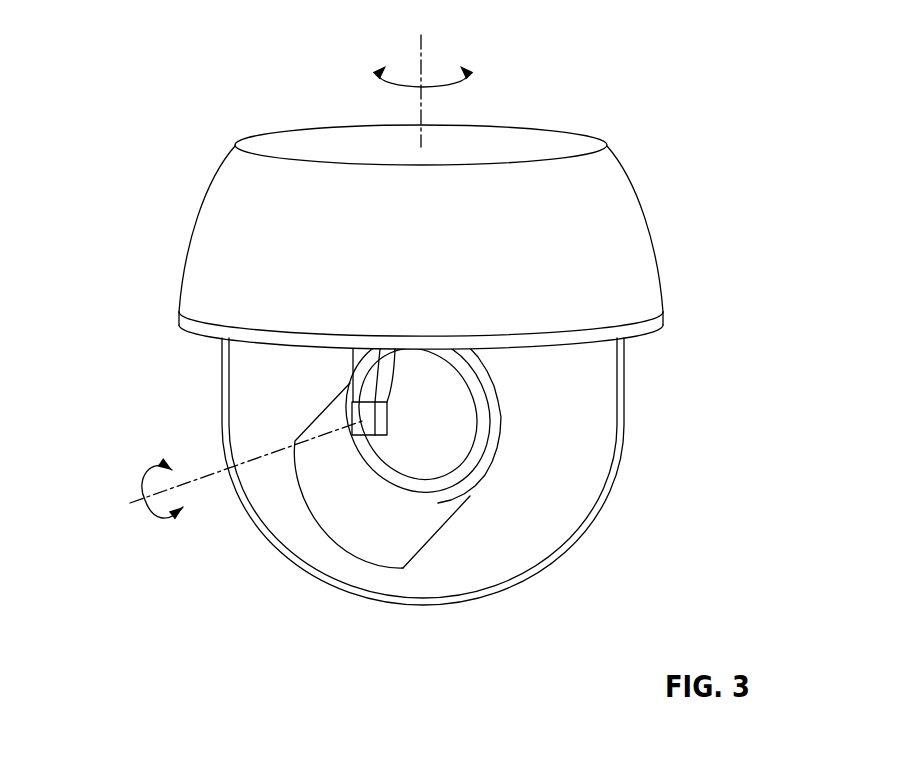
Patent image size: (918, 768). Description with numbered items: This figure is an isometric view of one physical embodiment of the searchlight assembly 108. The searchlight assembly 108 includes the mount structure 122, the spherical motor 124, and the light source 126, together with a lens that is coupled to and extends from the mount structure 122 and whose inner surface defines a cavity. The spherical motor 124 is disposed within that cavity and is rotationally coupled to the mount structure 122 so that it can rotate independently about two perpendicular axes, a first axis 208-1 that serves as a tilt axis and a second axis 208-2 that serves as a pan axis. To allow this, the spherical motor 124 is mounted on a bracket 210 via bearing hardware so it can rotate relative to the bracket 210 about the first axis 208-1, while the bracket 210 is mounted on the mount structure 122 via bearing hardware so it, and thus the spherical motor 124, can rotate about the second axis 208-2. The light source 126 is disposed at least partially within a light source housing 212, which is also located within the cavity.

The searchlight assembly 108 is at (168, 113).
The mount structure 122 is at (629, 278).
The spherical motor 124 is at (454, 431).
The light source 126 is at (352, 521).
The bracket 210 is at (377, 363).
The light source housing 212 is at (413, 535).
The first axis 208-1 is at (213, 471).
The second axis 208-2 is at (422, 58).